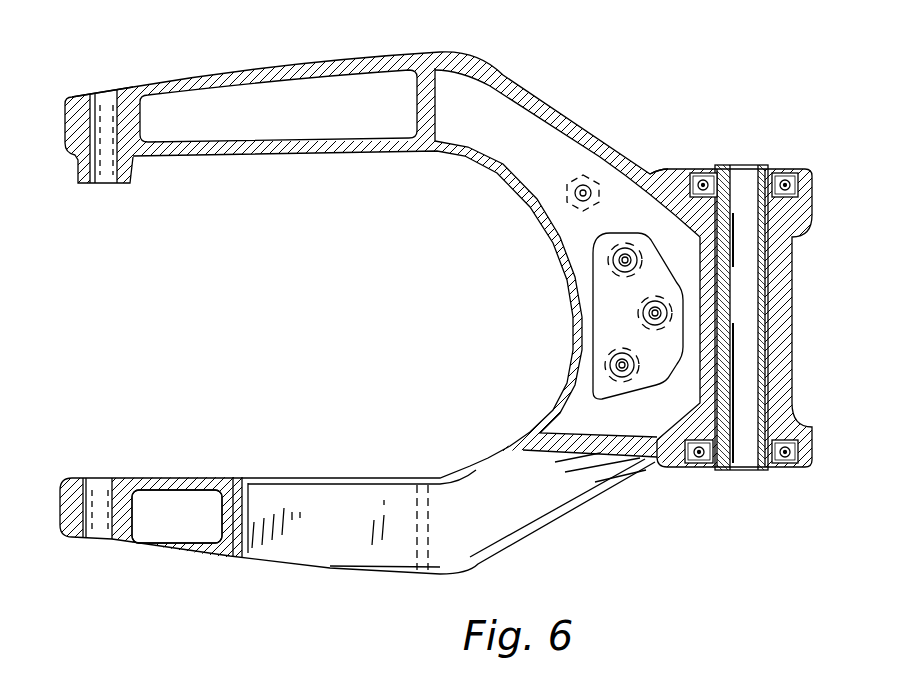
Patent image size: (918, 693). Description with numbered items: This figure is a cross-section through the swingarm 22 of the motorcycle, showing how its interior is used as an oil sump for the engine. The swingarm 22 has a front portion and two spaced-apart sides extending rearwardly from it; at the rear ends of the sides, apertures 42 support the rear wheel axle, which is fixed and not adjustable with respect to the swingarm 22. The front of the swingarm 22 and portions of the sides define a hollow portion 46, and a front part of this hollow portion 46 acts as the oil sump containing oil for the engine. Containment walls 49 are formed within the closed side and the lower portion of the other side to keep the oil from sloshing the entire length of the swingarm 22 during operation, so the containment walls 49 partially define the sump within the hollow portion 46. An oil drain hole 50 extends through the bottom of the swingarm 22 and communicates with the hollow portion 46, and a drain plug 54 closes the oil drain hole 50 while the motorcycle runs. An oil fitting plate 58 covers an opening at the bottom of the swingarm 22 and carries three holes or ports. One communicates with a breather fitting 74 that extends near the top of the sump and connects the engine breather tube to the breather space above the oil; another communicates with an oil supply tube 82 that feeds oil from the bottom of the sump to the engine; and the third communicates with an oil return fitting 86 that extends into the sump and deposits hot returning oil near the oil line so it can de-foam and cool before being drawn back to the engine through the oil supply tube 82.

The swingarm 22 is at (362, 193).
The apertures 42 is at (103, 186).
The hollow portion 46 is at (510, 108).
The containment walls 49 is at (428, 106).
The oil drain hole 50 is at (592, 190).
The drain plug 54 is at (582, 174).
The oil fitting plate 58 is at (667, 345).
The breather fitting 74 is at (603, 257).
The oil supply tube 82 is at (640, 312).
The oil return fitting 86 is at (610, 366).